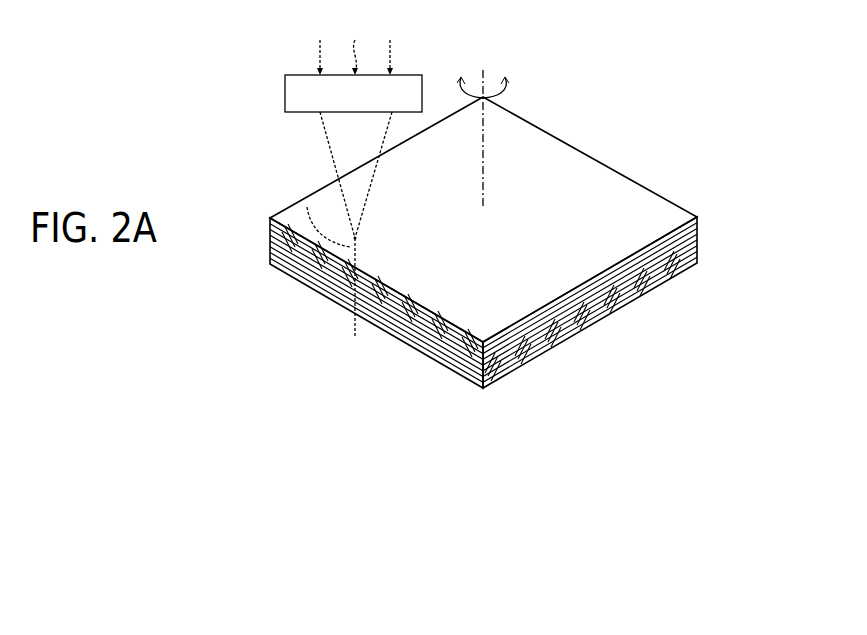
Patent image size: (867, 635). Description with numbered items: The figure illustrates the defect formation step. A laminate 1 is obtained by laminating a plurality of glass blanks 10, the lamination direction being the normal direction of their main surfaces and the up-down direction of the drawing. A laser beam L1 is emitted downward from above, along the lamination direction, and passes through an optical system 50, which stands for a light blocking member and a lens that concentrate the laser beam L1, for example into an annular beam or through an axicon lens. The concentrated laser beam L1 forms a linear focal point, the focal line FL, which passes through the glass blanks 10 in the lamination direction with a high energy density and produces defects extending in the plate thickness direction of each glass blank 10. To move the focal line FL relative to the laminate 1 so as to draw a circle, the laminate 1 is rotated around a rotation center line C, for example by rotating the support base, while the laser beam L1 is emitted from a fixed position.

The laminate 1 is at (507, 222).
The glass blank 10 is at (640, 183).
The optical system 50 is at (285, 97).
The laser beam L1 is at (355, 181).
The focal line FL is at (306, 206).
The rotation center line C is at (483, 130).